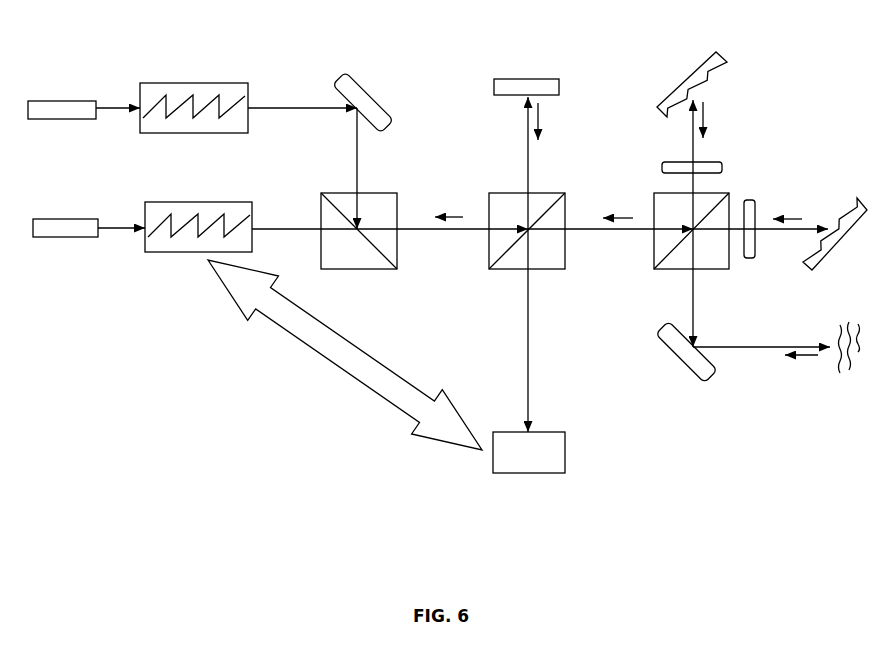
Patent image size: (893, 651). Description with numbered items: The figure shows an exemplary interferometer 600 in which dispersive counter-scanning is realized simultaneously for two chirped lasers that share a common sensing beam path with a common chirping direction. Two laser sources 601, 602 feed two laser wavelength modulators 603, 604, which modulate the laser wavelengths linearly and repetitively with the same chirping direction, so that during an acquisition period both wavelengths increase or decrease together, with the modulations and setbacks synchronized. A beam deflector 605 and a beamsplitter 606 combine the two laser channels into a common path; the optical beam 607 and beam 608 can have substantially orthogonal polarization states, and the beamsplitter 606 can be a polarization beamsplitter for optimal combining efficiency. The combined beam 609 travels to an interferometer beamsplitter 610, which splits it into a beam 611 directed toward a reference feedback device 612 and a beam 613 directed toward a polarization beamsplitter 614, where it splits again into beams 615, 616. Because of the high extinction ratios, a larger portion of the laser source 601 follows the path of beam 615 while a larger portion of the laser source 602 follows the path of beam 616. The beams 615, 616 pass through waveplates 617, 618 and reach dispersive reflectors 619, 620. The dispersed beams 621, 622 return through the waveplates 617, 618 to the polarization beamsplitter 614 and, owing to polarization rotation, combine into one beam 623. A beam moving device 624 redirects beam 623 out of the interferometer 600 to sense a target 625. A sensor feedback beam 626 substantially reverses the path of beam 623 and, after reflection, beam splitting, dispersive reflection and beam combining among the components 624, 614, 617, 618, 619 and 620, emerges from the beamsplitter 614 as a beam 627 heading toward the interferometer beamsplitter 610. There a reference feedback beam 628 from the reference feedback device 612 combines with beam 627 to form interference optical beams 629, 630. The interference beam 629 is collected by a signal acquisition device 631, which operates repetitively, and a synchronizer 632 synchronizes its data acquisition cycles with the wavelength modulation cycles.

The interferometer 600 is at (162, 368).
The laser source 601 is at (78, 212).
The laser source 602 is at (72, 93).
The laser wavelength modulator 603 is at (209, 197).
The laser wavelength modulator 604 is at (199, 75).
The beam deflector 605 is at (325, 80).
The beamsplitter 606 is at (350, 275).
The optical beam 607 is at (350, 183).
The beam 608 is at (290, 215).
The combined beam 609 is at (450, 235).
The interferometer beamsplitter 610 is at (500, 185).
The beam 611 is at (518, 127).
The reference feedback device 612 is at (538, 72).
The beam 613 is at (615, 233).
The polarization beamsplitter 614 is at (665, 275).
The beam 615 is at (798, 237).
The beam 616 is at (682, 147).
The waveplate 617 is at (750, 265).
The waveplate 618 is at (730, 162).
The dispersive reflector 619 is at (840, 252).
The dispersive reflector 620 is at (728, 85).
The dispersed beam 621 is at (792, 212).
The dispersed beam 622 is at (708, 128).
The beam 623 is at (747, 355).
The beam moving device 624 is at (687, 368).
The target 625 is at (845, 375).
The sensor feedback beam 626 is at (797, 360).
The beam 627 is at (620, 208).
The reference feedback beam 628 is at (543, 122).
The interference optical beam 629 is at (518, 347).
The interference optical beam 630 is at (443, 200).
The signal acquisition device 631 is at (508, 418).
The synchronizer 632 is at (333, 378).